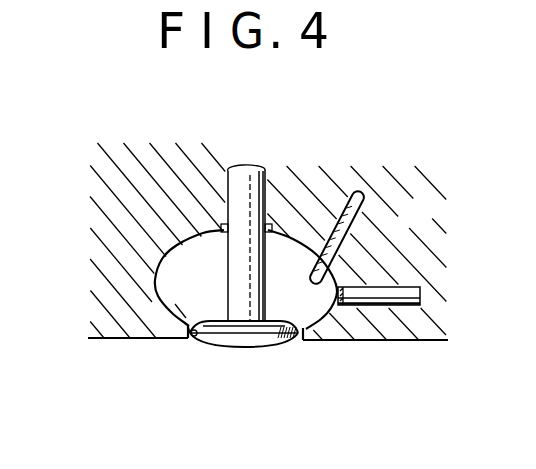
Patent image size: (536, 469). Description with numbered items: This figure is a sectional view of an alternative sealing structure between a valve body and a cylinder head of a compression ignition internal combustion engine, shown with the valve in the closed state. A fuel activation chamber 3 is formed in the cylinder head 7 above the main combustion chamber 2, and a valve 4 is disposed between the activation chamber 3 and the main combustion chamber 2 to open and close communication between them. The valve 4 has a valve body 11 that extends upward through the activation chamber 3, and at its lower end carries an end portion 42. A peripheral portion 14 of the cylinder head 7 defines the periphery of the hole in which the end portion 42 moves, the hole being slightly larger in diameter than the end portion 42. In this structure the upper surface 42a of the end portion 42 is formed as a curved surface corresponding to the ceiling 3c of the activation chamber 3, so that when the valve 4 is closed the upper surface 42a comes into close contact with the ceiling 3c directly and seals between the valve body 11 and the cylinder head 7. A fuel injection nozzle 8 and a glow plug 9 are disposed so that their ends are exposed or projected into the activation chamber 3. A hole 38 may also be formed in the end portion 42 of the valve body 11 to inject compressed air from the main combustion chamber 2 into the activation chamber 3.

The main combustion chamber 2 is at (135, 393).
The fuel activation chamber 3 is at (209, 287).
The ceiling of the activation chamber 3c is at (208, 228).
The valve 4 is at (297, 346).
The cylinder head 7 is at (124, 209).
The fuel injection nozzle 8 is at (383, 306).
The glow plug 9 is at (346, 224).
The valve body 11 is at (241, 190).
The peripheral portion 14 is at (195, 345).
The hole 38 is at (271, 348).
The end portion 42 is at (235, 348).
The upper surface 42a is at (186, 318).